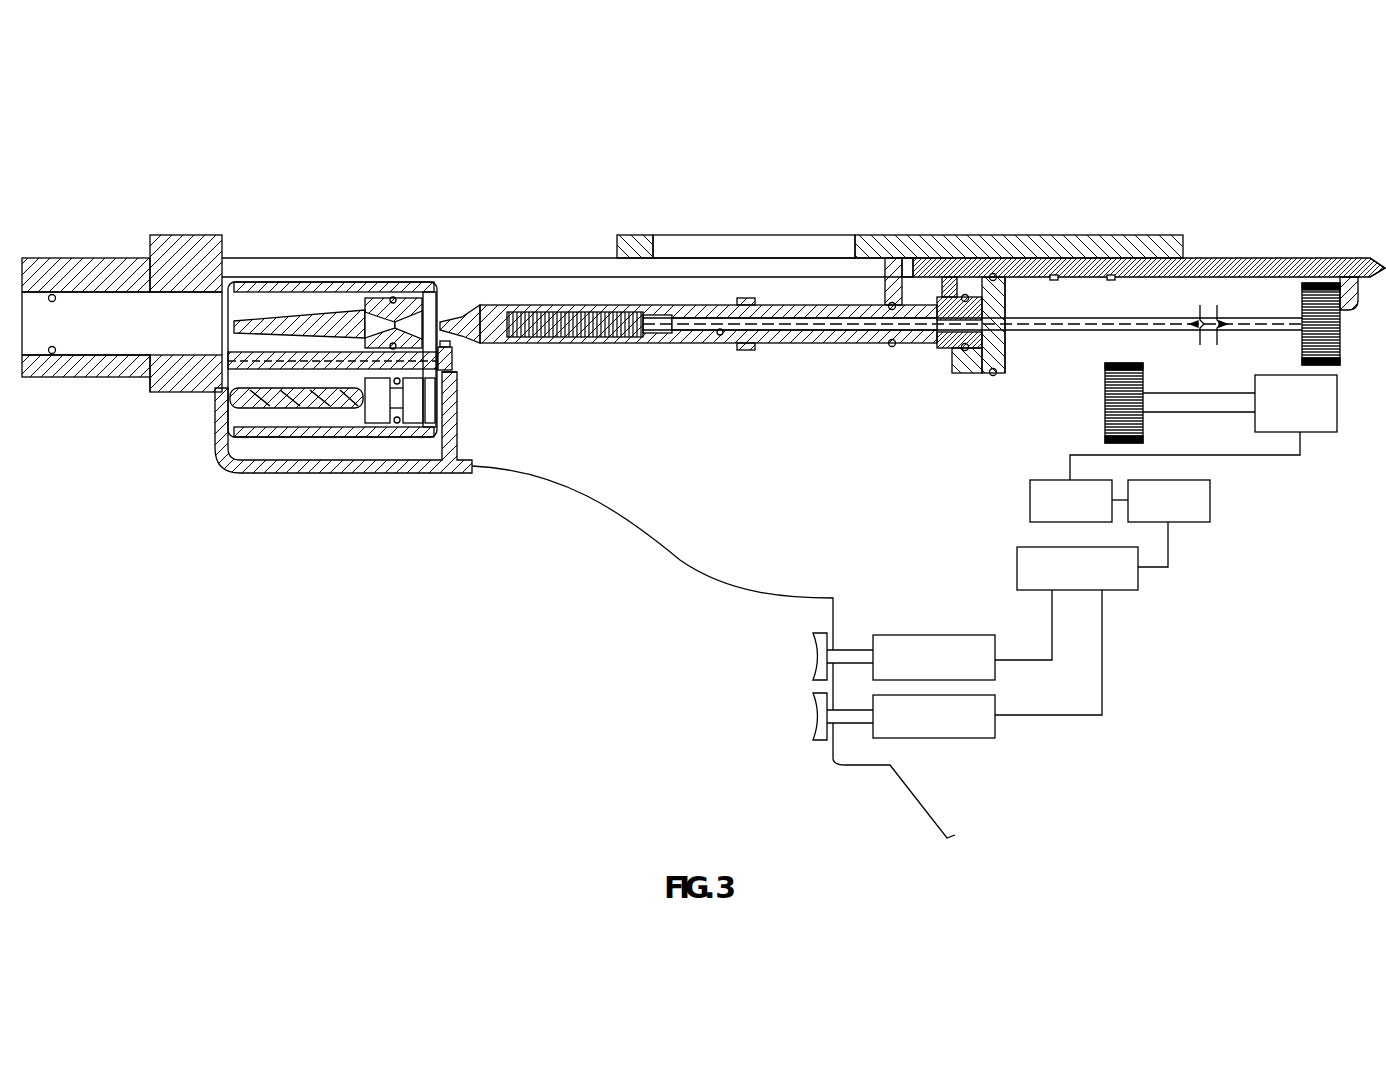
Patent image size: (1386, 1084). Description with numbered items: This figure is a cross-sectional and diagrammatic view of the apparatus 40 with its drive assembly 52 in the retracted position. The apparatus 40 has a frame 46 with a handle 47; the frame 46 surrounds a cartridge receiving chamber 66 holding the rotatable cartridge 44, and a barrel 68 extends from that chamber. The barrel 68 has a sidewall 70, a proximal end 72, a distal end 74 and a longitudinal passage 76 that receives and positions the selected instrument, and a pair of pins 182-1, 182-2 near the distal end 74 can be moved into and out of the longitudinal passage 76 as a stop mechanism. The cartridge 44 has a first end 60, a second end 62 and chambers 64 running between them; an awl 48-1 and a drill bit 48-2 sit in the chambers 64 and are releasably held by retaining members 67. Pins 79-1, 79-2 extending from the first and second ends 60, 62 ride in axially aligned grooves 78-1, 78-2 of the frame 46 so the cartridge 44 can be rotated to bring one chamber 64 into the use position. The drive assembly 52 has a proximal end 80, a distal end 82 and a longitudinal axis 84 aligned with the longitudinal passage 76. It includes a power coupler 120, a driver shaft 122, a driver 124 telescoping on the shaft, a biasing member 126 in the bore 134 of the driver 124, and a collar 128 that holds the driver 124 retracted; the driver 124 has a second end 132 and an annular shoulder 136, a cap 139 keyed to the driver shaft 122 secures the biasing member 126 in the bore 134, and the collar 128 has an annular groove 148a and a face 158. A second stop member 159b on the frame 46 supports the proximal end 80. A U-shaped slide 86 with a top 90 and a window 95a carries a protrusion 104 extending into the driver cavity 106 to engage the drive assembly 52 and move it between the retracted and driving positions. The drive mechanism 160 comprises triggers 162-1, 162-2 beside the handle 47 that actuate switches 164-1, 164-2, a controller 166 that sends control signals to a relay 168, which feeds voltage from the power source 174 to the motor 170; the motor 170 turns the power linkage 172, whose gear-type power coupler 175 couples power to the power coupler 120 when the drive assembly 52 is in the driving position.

The apparatus 40 is at (150, 130).
The cartridge 44 is at (333, 275).
The frame 46 is at (640, 546).
The handle 47 is at (920, 797).
The awl 48-1 is at (330, 318).
The drill bit 48-2 is at (262, 410).
The drive assembly 52 is at (798, 344).
The first end 60 is at (226, 400).
The second end 62 is at (440, 405).
The chambers 64 is at (262, 286).
The cartridge receiving chamber 66 is at (362, 468).
The retaining members 67 is at (396, 298).
The barrel 68 is at (70, 378).
The sidewall 70 is at (35, 378).
The proximal end 72 is at (192, 235).
The distal end 74 is at (24, 262).
The longitudinal passage 76 is at (30, 292).
The groove 78-1 is at (222, 342).
The groove 78-2 is at (454, 350).
The pin 79-1 is at (200, 372).
The pin 79-2 is at (460, 372).
The proximal end 80 is at (1346, 280).
The distal end 82 is at (466, 310).
The longitudinal axis 84 is at (1078, 318).
The slide 86 is at (1000, 262).
The top 90 is at (1122, 236).
The window 95a is at (652, 240).
The protrusion 104 is at (889, 268).
The driver cavity 106 is at (830, 452).
The power coupler 120 is at (1341, 362).
The driver shaft 122 is at (1056, 334).
The driver 124 is at (640, 345).
The biasing member 126 is at (562, 314).
The collar 128 is at (976, 374).
The second end 132 is at (906, 346).
The bore 134 is at (743, 350).
The annular shoulder 136 is at (748, 298).
The cap 139 is at (996, 282).
The annular groove 148a is at (910, 262).
The face 158 is at (956, 297).
The second stop member 159b is at (1376, 262).
The drive mechanism 160 is at (1178, 632).
The trigger 162-1 is at (812, 653).
The trigger 162-2 is at (812, 713).
The switch 164-1 is at (937, 635).
The switch 164-2 is at (935, 740).
The controller 166 is at (1017, 570).
The relay 168 is at (1030, 500).
The motor 170 is at (1302, 434).
The power linkage 172 is at (1172, 393).
The power source 174 is at (1212, 500).
The power coupler 175 is at (1104, 400).
The pin 182-1 is at (56, 299).
The pin 182-2 is at (56, 350).